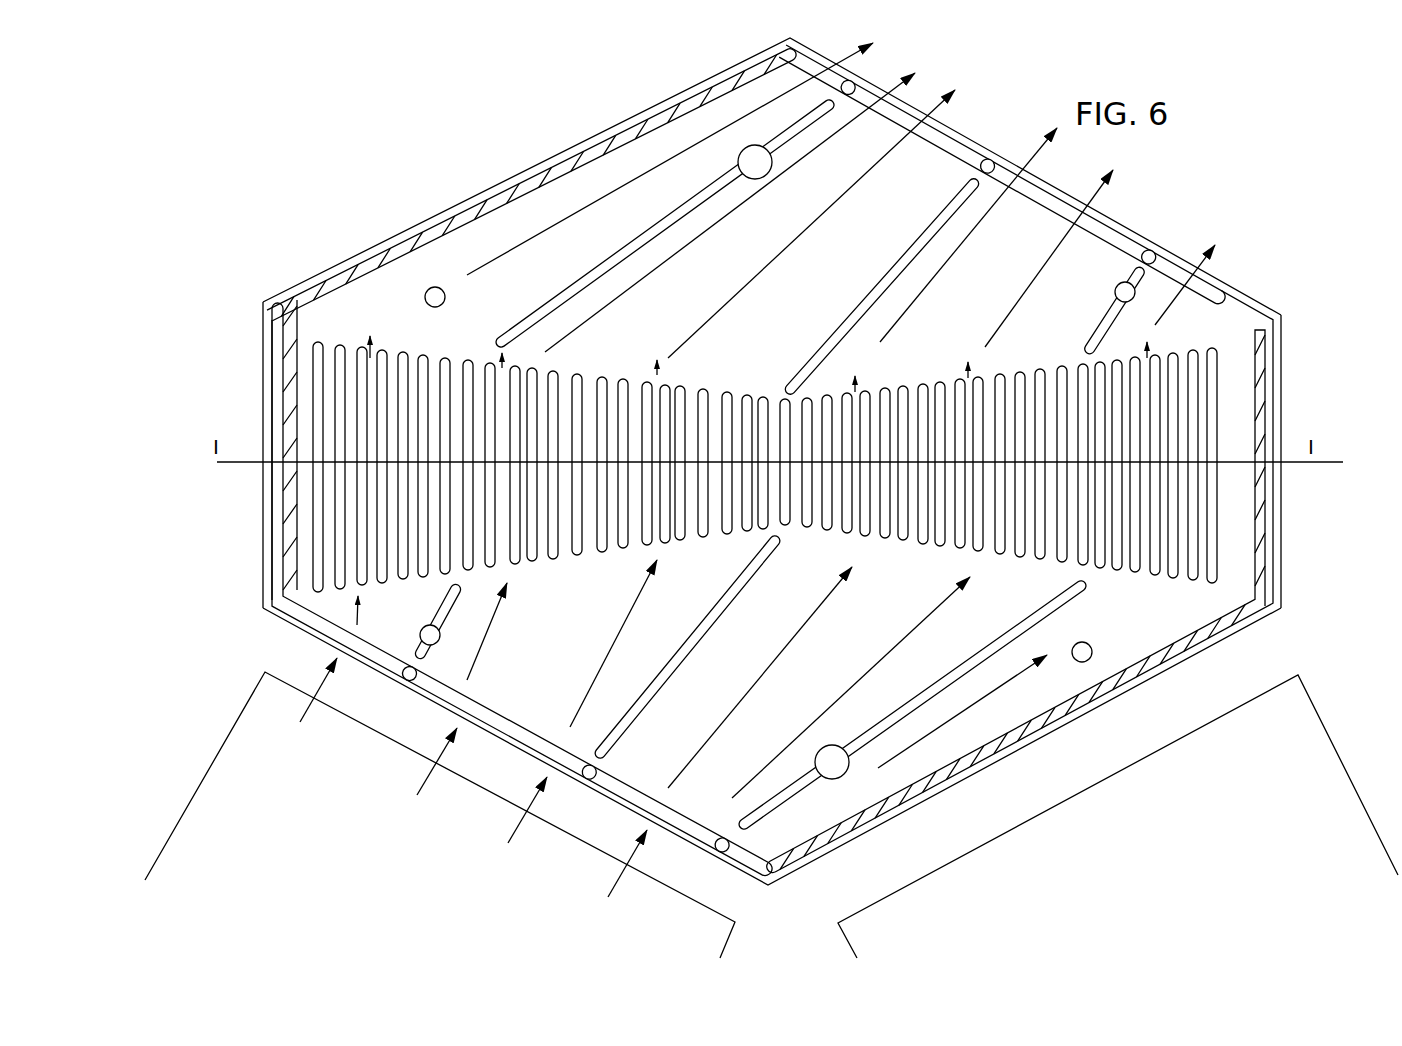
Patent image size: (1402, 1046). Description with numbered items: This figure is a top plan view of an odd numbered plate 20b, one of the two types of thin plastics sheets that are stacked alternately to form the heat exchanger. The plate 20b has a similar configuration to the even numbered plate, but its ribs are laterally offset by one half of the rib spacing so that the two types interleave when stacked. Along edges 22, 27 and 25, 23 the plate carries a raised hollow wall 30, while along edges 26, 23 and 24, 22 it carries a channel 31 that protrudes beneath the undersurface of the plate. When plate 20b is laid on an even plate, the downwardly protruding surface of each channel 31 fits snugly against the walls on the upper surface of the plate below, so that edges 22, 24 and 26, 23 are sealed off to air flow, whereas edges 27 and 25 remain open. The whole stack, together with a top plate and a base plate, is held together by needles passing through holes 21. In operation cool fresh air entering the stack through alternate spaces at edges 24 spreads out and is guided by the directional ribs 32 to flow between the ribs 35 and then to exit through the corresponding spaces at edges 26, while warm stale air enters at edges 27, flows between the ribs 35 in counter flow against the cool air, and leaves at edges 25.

The odd numbered plate 20b is at (1332, 324).
The holes 21 is at (1088, 660).
The edge 22 is at (263, 405).
The edge 23 is at (1283, 528).
The edge 24 is at (655, 838).
The edge 25 is at (878, 830).
The edge 26 is at (1094, 207).
The edge 27 is at (546, 163).
The raised hollow wall 30 is at (425, 233).
The channel 31 is at (1222, 292).
The directional ribs 32 is at (666, 236).
The ribs 35 is at (1215, 410).